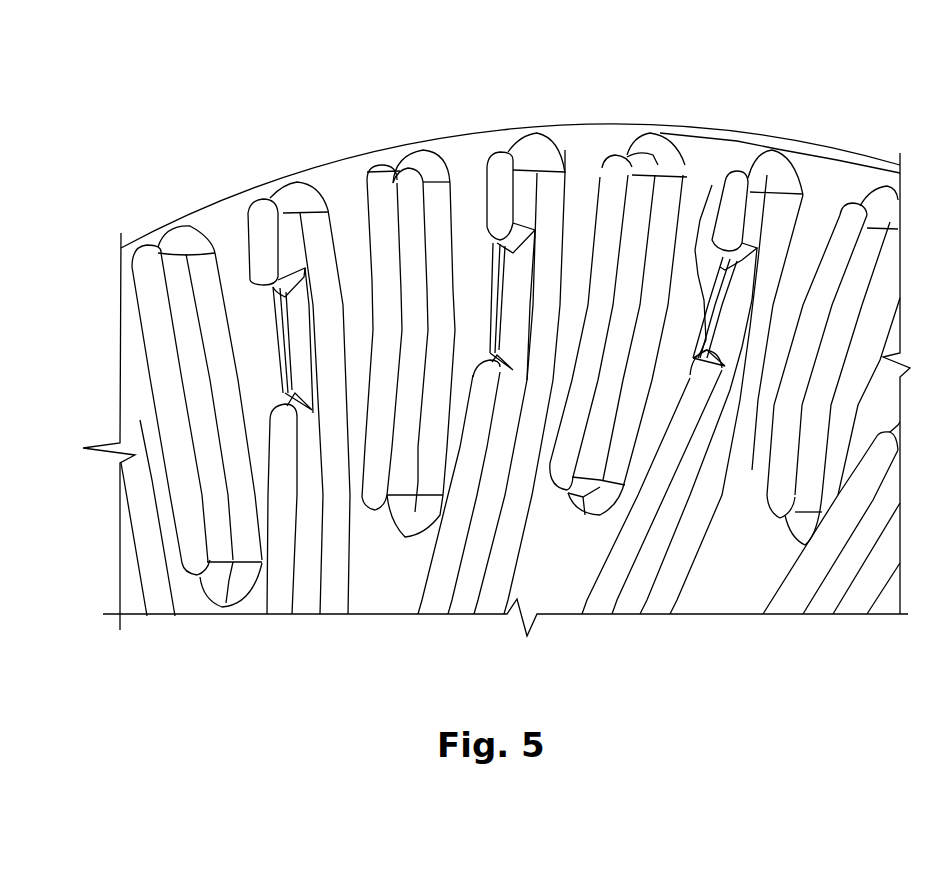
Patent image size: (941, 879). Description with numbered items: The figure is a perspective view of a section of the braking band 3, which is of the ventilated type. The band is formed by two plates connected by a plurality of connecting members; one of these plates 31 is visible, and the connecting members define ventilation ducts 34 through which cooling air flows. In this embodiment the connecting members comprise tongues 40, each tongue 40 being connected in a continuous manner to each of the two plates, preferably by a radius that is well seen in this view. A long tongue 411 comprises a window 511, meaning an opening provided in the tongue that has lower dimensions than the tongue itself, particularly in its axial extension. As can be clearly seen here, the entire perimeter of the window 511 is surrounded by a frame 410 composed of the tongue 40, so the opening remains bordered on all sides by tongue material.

The braking band 3 is at (840, 148).
The plate 31 is at (473, 130).
The ventilation duct 34 is at (587, 158).
The tongue 40 is at (620, 162).
The frame 410 is at (735, 171).
The long tongue 411 is at (745, 165).
The window 511 is at (728, 378).